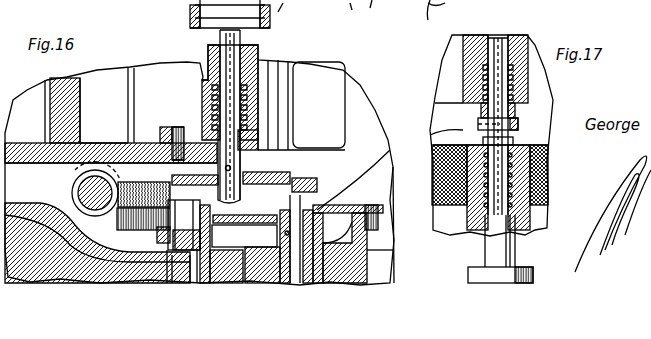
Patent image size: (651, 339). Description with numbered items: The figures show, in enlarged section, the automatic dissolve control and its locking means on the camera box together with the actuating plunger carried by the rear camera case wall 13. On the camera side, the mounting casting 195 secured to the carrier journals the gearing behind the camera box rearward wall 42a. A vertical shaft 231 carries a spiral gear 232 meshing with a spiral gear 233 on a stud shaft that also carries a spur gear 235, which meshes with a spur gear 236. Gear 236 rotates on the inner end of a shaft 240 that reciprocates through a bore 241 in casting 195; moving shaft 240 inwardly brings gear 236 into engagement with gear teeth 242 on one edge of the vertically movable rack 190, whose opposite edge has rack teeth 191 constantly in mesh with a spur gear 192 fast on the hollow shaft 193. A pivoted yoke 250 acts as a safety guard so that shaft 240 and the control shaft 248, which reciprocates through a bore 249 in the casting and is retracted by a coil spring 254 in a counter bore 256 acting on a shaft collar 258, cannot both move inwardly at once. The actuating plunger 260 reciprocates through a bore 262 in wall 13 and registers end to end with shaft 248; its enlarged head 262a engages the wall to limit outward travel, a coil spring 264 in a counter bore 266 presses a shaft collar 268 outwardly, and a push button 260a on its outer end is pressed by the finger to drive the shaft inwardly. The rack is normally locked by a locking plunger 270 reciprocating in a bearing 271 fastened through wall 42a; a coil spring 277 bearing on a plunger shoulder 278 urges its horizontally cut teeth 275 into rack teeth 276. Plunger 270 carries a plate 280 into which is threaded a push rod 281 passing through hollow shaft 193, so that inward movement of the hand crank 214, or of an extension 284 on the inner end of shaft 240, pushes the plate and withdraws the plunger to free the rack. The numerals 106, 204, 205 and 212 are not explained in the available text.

In FIG. 16, the cover 106 is at (297, 9).
In FIG. 16, the pin 204 is at (337, 8).
In FIG. 16, the lever 205 is at (364, 11).
In FIG. 17, the arm 212 is at (417, 8).
In FIG. 17, the hand crank 214 is at (435, 18).
In FIG. 16, the camera box rearward wall 42a is at (85, 150).
In FIG. 16, the spiral gear 232 is at (97, 150).
In FIG. 16, the spiral gear 233 is at (133, 150).
In FIG. 16, the extension 284 is at (148, 143).
In FIG. 16, the horizontally cut teeth 275 is at (207, 125).
In FIG. 16, the coil spring 277 is at (203, 65).
In FIG. 16, the bearing 271 is at (257, 90).
In FIG. 16, the plunger shoulder 278 is at (242, 117).
In FIG. 16, the locking plunger 270 is at (287, 143).
In FIG. 16, the rack teeth 276 is at (270, 167).
In FIG. 16, the plate 280 is at (313, 157).
In FIG. 16, the push rod 281 is at (300, 203).
In FIG. 16, the vertical shaft 231 is at (93, 195).
In FIG. 16, the spur gear 235 is at (110, 230).
In FIG. 16, the spur gear 236 is at (163, 233).
In FIG. 16, the pivoted yoke 250 is at (173, 277).
In FIG. 16, the shaft 240 is at (195, 273).
In FIG. 16, the bore 241 is at (213, 270).
In FIG. 16, the gear teeth 242 is at (244, 231).
In FIG. 16, the rack teeth 191 is at (248, 232).
In FIG. 16, the rack 190 is at (247, 277).
In FIG. 16, the hollow shaft 193 is at (307, 277).
In FIG. 16, the mounting casting 195 is at (386, 262).
In FIG. 17, the mounting casting 195 is at (485, 20).
In FIG. 17, the control shaft 248 is at (515, 48).
In FIG. 17, the bore 249 is at (488, 50).
In FIG. 17, the coil spring 254 is at (512, 72).
In FIG. 17, the counter bore 256 is at (512, 90).
In FIG. 17, the enlarged head 262a is at (515, 125).
In FIG. 17, the bore 262 is at (515, 148).
In FIG. 17, the shaft collar 258 is at (481, 113).
In FIG. 17, the actuating plunger 260 is at (478, 152).
In FIG. 17, the spur gear 192 is at (470, 168).
In FIG. 17, the counter bore 266 is at (483, 192).
In FIG. 17, the coil spring 264 is at (483, 206).
In FIG. 17, the shaft collar 268 is at (495, 246).
In FIG. 17, the push button 260a is at (490, 272).
In FIG. 17, the rear camera case wall 13 is at (547, 228).